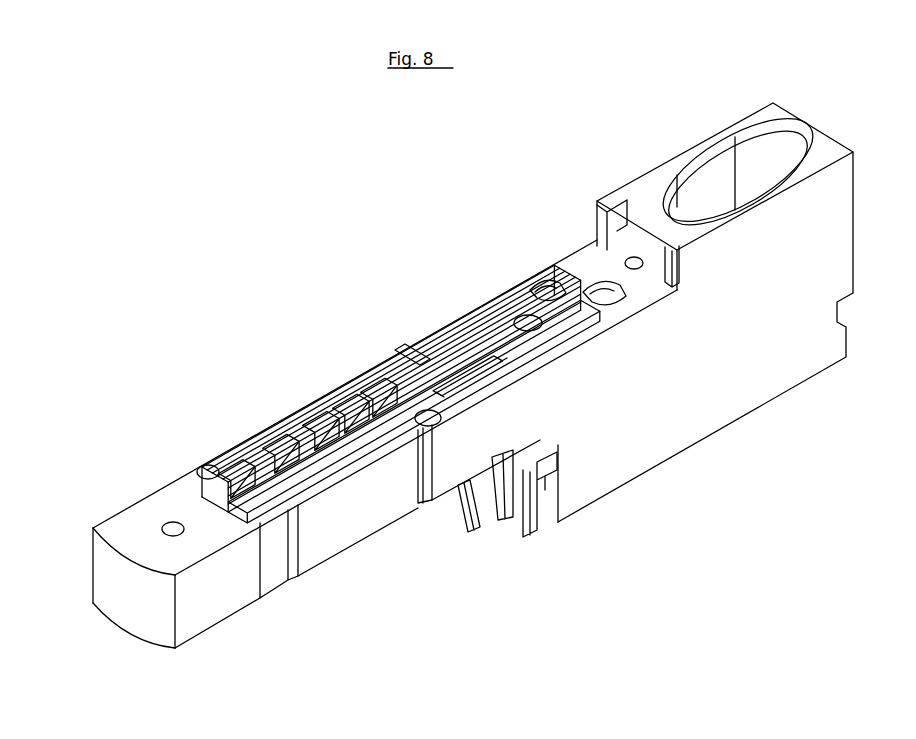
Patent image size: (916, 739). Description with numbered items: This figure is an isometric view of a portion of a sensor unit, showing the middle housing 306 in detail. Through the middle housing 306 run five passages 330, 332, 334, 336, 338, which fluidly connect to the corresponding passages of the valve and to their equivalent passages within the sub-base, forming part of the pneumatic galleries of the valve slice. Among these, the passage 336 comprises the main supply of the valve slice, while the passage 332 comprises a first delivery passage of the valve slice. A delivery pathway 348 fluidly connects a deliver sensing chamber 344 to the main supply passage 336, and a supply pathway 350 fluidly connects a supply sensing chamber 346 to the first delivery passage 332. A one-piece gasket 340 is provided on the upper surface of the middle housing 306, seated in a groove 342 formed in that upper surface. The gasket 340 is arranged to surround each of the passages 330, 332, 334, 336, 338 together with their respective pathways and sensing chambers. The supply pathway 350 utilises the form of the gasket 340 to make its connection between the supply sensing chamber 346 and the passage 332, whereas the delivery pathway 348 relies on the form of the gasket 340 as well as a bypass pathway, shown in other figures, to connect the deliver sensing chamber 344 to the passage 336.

The middle housing 306 is at (708, 443).
The passage 330 is at (243, 481).
The passage 332 is at (287, 465).
The passage 334 is at (327, 452).
The passage 336 is at (357, 432).
The passage 338 is at (385, 412).
The one-piece gasket 340 is at (280, 503).
The groove 342 is at (327, 473).
The deliver sensing chamber 344 is at (610, 292).
The supply sensing chamber 346 is at (552, 293).
The delivery pathway 348 is at (513, 360).
The supply pathway 350 is at (410, 368).